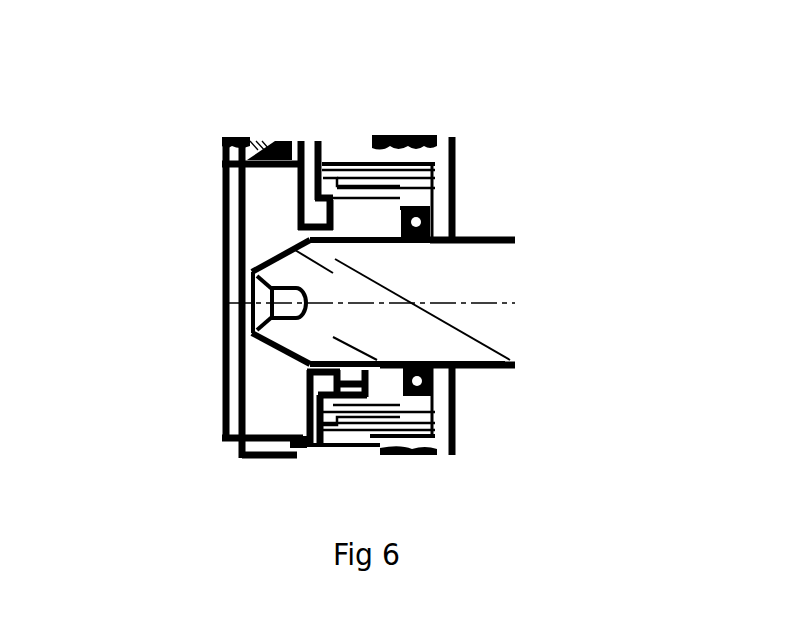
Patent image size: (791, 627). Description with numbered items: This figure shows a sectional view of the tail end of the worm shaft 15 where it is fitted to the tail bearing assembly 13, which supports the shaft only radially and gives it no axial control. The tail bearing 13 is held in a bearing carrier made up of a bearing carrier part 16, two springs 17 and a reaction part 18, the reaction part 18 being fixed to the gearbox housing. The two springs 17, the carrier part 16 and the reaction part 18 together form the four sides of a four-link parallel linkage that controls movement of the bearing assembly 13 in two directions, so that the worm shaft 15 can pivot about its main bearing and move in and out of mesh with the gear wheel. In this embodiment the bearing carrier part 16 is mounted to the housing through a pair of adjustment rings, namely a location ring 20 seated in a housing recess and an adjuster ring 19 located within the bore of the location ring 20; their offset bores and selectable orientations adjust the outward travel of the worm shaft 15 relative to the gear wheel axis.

The tail bearing assembly 13 is at (430, 226).
The worm shaft 15 is at (328, 322).
The bearing carrier part 16 is at (387, 382).
The springs 17 is at (433, 238).
The reaction part 18 is at (320, 217).
The adjuster ring 19 is at (343, 192).
The location ring 20 is at (402, 183).